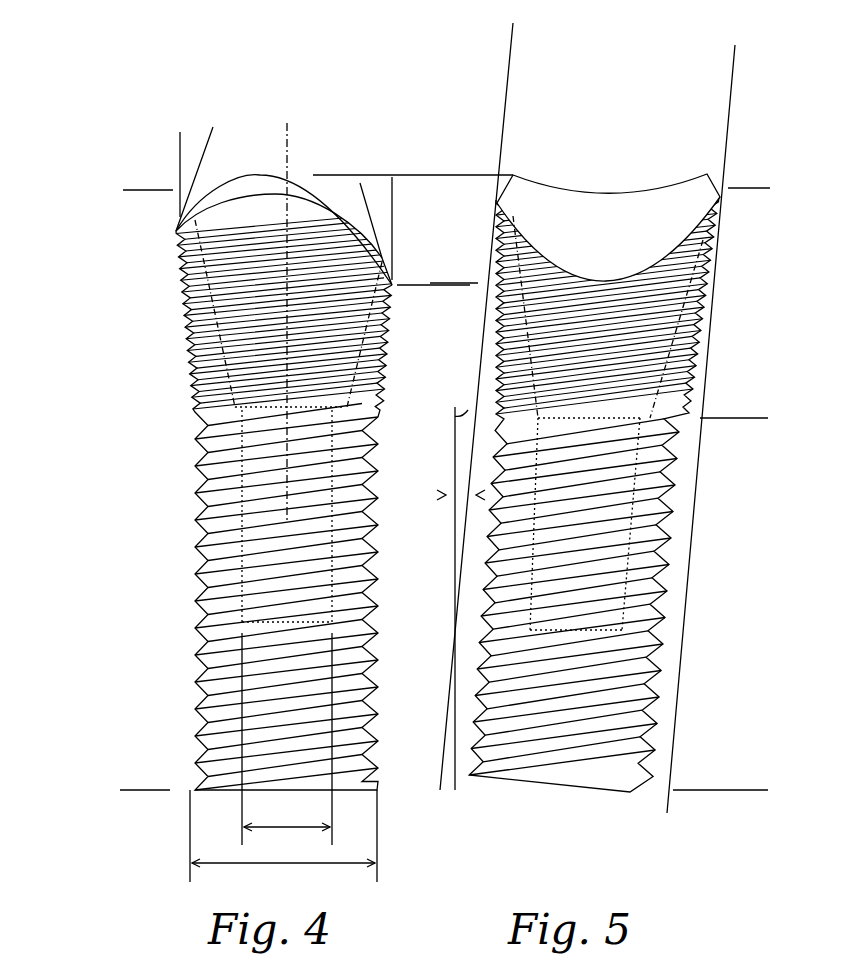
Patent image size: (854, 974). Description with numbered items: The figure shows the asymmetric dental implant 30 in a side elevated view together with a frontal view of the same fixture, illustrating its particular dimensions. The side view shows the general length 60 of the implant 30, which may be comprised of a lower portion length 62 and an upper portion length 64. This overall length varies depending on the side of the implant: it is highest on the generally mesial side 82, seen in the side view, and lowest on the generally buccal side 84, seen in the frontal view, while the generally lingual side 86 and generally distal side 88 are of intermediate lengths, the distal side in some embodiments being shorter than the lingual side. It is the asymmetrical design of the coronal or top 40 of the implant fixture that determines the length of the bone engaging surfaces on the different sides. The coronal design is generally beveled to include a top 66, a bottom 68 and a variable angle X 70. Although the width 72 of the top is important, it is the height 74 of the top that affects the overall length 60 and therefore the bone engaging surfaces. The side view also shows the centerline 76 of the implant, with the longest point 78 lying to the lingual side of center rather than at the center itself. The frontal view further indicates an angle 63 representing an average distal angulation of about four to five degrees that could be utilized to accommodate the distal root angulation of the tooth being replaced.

In FIG. 4, the implant 30 is at (168, 453).
In FIG. 5, the implant 30 is at (691, 475).
In FIG. 4, the coronal or top of the implant fixture 40 is at (226, 185).
In FIG. 4, the general length 60 is at (141, 789).
In FIG. 5, the lower portion length 62 is at (732, 420).
In FIG. 5, the angle 63 is at (467, 402).
In FIG. 5, the upper portion length 64 is at (753, 189).
In FIG. 4, the top 66 is at (300, 206).
In FIG. 4, the bottom 68 is at (312, 206).
In FIG. 4, the variable angle X 70 is at (196, 134).
In FIG. 5, the width of the top 72 is at (721, 87).
In FIG. 4, the height of the top 74 is at (442, 180).
In FIG. 5, the height of the top 74 is at (442, 178).
In FIG. 4, the centerline 76 is at (287, 128).
In FIG. 4, the longest point 78 is at (207, 186).
In FIG. 5, the generally mesial side 82 is at (723, 194).
In FIG. 4, the generally buccal side 84 is at (397, 268).
In FIG. 5, the generally buccal side 84 is at (603, 268).
In FIG. 4, the generally lingual side 86 is at (175, 226).
In FIG. 5, the generally lingual side 86 is at (610, 192).
In FIG. 5, the generally distal side 88 is at (497, 200).